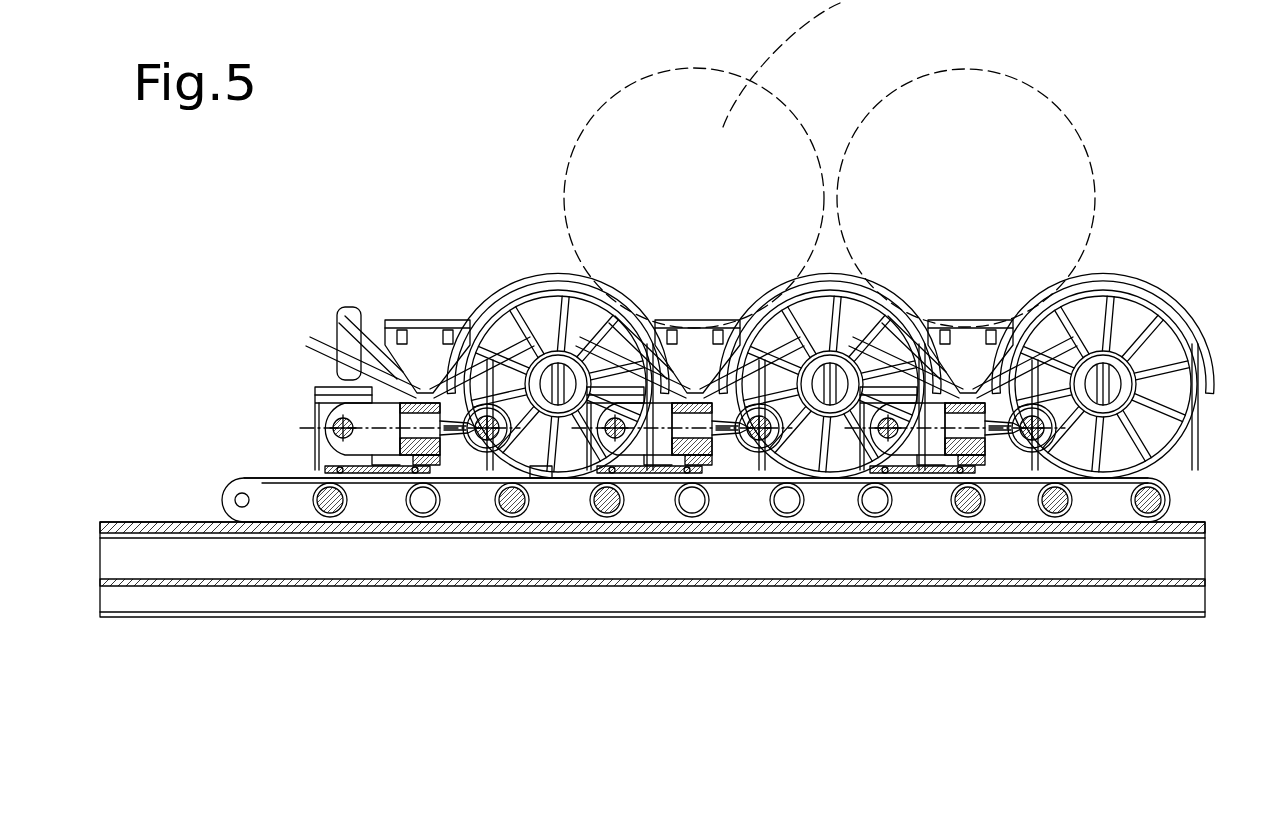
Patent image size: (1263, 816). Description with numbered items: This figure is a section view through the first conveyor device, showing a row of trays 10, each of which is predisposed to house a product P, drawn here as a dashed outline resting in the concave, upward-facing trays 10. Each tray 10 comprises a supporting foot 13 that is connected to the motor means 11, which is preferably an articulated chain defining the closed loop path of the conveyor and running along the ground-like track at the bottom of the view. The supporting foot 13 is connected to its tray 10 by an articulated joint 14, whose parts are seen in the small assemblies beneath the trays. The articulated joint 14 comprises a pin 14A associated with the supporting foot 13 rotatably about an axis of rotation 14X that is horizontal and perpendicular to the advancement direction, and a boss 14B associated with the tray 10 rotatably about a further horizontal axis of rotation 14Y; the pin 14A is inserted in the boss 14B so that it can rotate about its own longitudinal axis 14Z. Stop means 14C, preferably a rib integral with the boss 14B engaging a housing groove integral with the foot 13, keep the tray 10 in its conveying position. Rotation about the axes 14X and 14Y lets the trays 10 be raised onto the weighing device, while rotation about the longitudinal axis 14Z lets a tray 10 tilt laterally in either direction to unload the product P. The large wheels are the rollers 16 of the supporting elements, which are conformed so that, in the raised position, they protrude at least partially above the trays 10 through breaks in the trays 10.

The tray 10 is at (420, 340).
The motor means 11 is at (262, 488).
The supporting foot 13 is at (312, 405).
The articulated joint 14 is at (387, 451).
The pin 14A is at (378, 442).
The boss 14B is at (424, 448).
The stop means 14C is at (428, 474).
The axis of rotation 14X is at (345, 418).
The axis of rotation 14Y is at (490, 416).
The longitudinal axis 14Z is at (541, 470).
The rollers 16 is at (543, 273).
The product P is at (1007, 140).